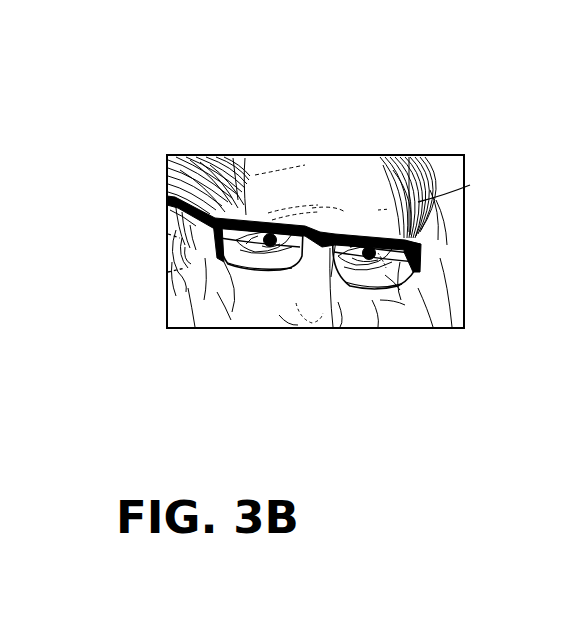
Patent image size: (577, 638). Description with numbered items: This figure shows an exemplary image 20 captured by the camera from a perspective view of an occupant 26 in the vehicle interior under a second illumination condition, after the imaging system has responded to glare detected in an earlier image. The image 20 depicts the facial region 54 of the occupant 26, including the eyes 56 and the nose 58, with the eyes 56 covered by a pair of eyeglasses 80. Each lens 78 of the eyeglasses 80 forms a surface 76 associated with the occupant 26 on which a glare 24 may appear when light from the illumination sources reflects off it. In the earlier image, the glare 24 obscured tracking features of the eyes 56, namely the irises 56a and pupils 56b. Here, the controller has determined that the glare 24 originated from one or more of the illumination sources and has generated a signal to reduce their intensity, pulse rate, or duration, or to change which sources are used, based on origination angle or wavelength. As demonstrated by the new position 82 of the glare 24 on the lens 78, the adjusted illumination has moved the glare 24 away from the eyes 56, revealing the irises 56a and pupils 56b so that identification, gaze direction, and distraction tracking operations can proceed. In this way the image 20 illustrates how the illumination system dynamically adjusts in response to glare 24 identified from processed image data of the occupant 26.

The image 20 is at (340, 117).
The glare 24 is at (238, 222).
The occupant 26 is at (470, 185).
The facial region 54 is at (387, 305).
The eyes 56 is at (258, 280).
The iris 56a is at (258, 280).
The pupil 56b is at (270, 262).
The nose 58 is at (313, 322).
The surface 76 is at (240, 283).
The lens 78 is at (393, 280).
The pair of eyeglasses 80 is at (168, 236).
The new position 82 is at (168, 272).